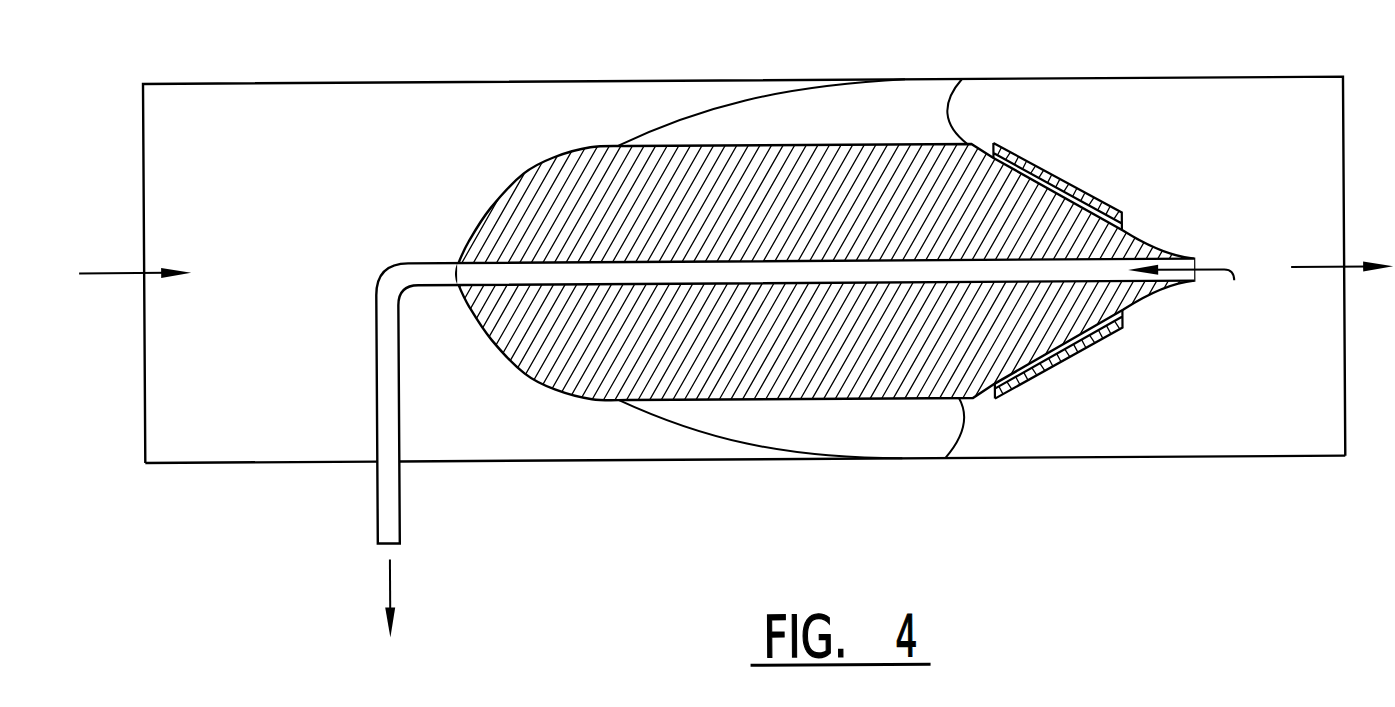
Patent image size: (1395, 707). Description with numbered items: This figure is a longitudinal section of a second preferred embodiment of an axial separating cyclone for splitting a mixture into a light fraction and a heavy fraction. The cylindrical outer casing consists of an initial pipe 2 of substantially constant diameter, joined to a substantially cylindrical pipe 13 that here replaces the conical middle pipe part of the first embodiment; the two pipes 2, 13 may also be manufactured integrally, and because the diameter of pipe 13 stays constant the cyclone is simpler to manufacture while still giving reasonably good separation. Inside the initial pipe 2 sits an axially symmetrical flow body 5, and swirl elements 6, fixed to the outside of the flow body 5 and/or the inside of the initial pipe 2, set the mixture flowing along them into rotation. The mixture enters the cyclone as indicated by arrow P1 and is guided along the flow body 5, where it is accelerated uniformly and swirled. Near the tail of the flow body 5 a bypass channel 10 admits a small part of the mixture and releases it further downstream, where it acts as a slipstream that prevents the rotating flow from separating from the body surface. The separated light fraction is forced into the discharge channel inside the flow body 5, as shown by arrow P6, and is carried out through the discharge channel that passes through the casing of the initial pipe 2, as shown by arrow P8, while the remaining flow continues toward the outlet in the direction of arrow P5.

The initial pipe 2 is at (538, 465).
The flow body 5 is at (532, 200).
The swirl elements 6 is at (915, 105).
The bypass channel 10 is at (1062, 196).
The substantially cylindrical pipe 13 is at (1146, 446).
The arrow P1 is at (135, 255).
The arrow P5 is at (1342, 248).
The arrow P6 is at (1183, 290).
The arrow P8 is at (410, 598).